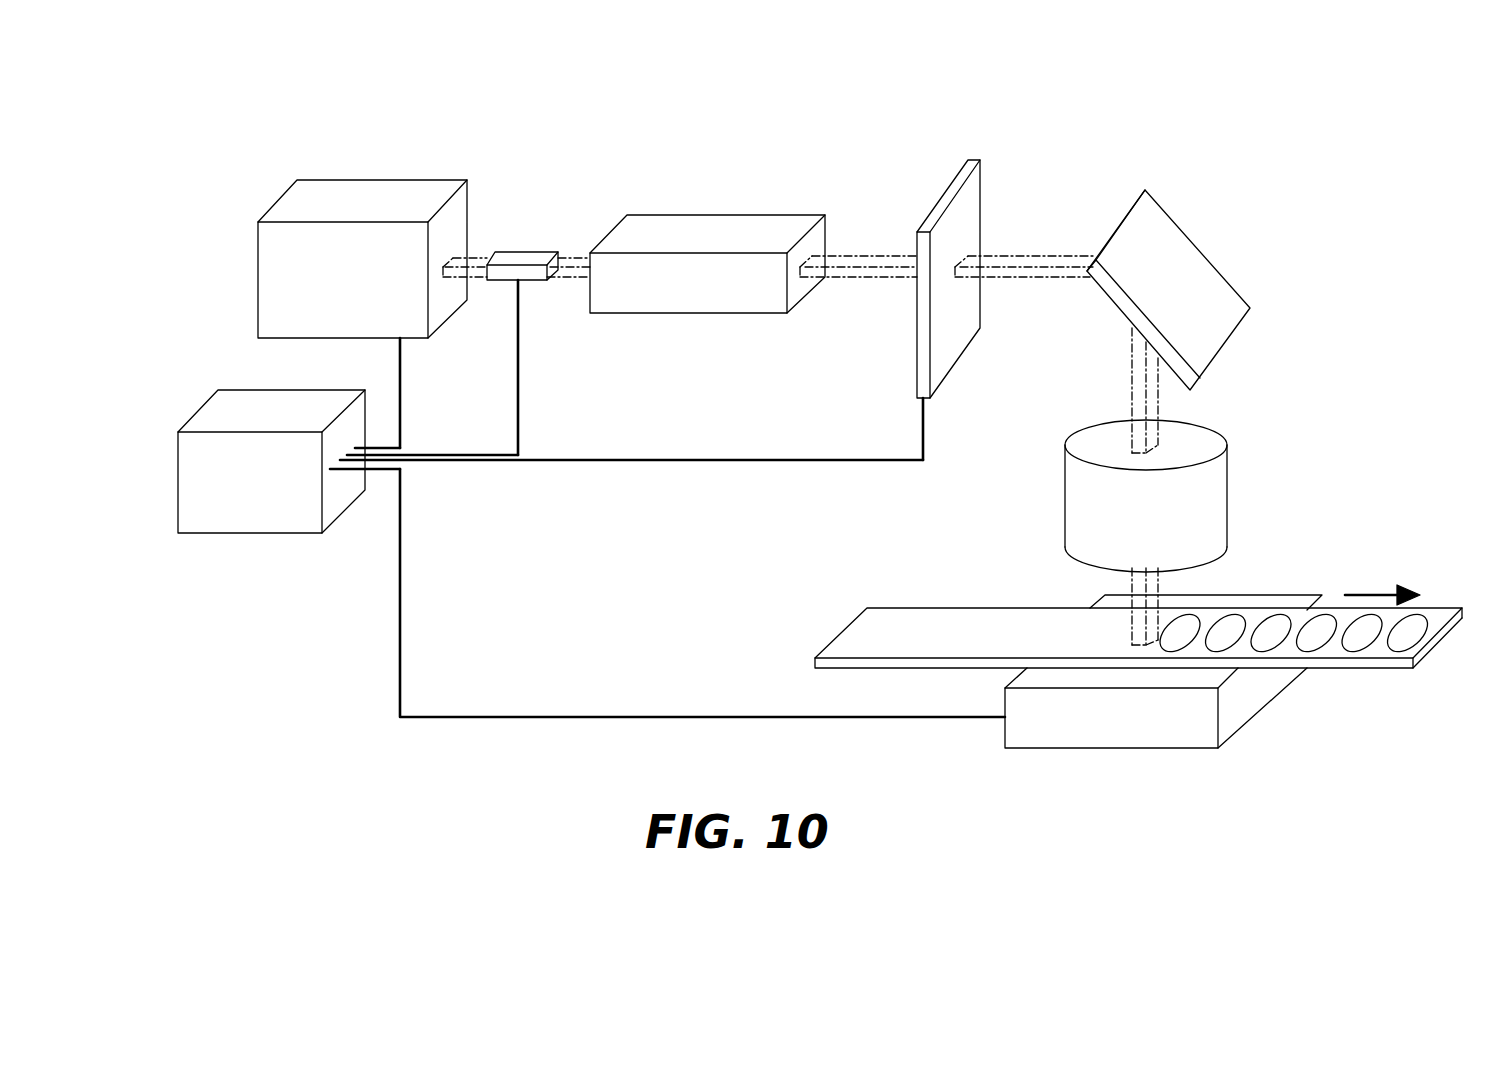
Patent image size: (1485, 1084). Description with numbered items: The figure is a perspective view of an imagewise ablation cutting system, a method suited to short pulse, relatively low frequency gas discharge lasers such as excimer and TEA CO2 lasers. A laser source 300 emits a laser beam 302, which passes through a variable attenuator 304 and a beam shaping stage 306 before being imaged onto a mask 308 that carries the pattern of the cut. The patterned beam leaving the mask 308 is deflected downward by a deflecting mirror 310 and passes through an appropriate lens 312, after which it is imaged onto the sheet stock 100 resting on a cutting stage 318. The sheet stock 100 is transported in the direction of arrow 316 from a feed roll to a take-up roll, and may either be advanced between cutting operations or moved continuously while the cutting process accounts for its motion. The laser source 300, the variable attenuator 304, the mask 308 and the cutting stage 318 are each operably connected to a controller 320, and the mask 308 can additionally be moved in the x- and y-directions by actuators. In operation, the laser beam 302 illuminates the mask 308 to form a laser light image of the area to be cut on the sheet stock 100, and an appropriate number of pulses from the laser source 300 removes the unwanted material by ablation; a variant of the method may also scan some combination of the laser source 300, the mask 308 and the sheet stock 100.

The laser source 300 is at (358, 185).
The laser beam 302 is at (475, 258).
The variable attenuator 304 is at (530, 255).
The beam shaping stage 306 is at (723, 227).
The mask 308 is at (962, 177).
The deflecting mirror 310 is at (1200, 258).
The lens 312 is at (1222, 490).
The arrow 316 is at (1372, 592).
The cutting stage 318 is at (1112, 750).
The controller 320 is at (260, 520).
The sheet stock 100 is at (1370, 668).